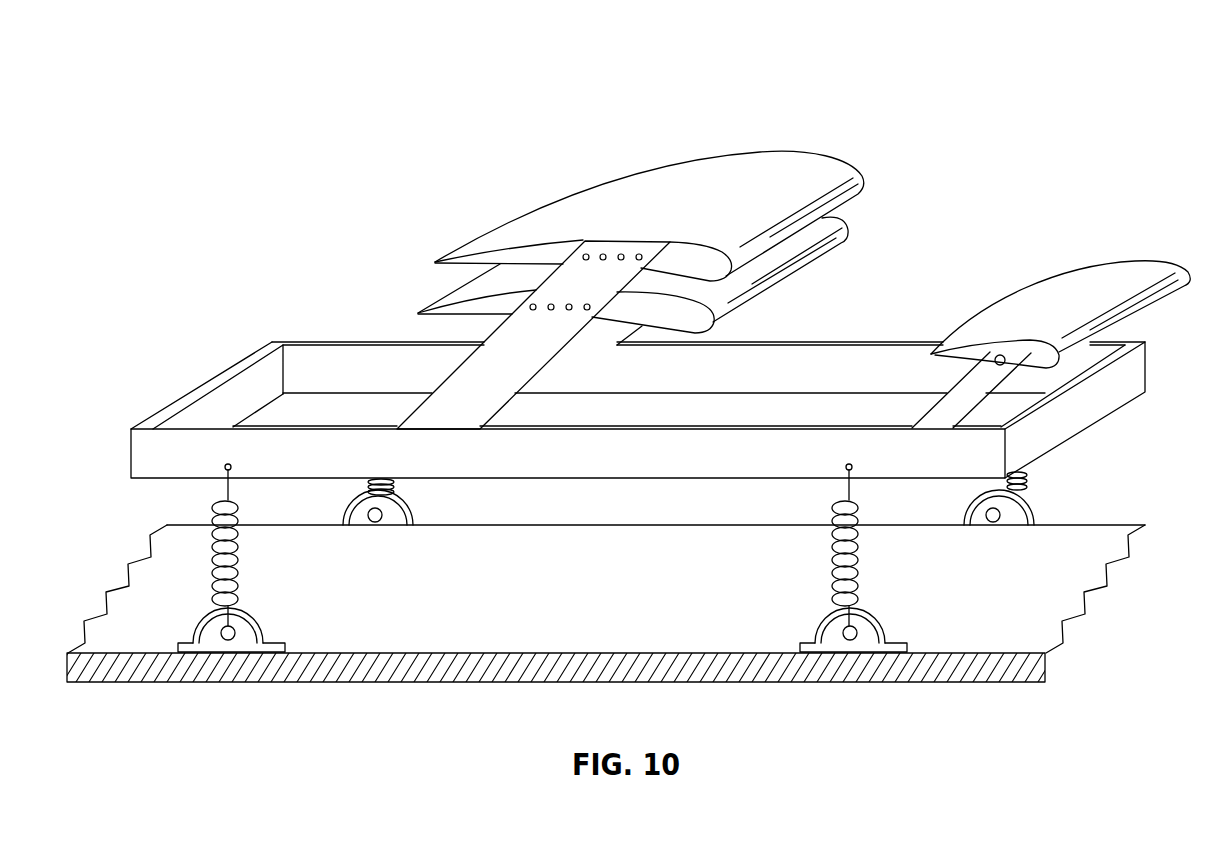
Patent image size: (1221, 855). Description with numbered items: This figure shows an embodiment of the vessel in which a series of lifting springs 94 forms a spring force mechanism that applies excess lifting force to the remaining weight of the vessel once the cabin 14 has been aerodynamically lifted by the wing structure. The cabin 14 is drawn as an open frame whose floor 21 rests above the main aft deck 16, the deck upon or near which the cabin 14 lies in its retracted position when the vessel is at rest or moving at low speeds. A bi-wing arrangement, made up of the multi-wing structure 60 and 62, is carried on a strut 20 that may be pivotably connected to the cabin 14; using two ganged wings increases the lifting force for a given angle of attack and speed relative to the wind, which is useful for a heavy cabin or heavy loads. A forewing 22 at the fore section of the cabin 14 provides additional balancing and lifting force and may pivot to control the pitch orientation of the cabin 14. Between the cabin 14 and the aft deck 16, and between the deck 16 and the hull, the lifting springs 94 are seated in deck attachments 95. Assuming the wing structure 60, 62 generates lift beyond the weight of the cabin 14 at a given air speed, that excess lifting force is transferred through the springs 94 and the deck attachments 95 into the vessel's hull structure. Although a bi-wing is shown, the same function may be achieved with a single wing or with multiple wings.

The cabin 14 is at (307, 342).
The main aft deck 16 is at (570, 603).
The strut 20 is at (452, 382).
The platform 21 is at (683, 421).
The forewing 22 is at (1090, 280).
The multi-wing structure 60 is at (822, 172).
The multi-wing structure 62 is at (813, 258).
The lifting spring 94 is at (367, 485).
The deck attachment 95 is at (413, 513).